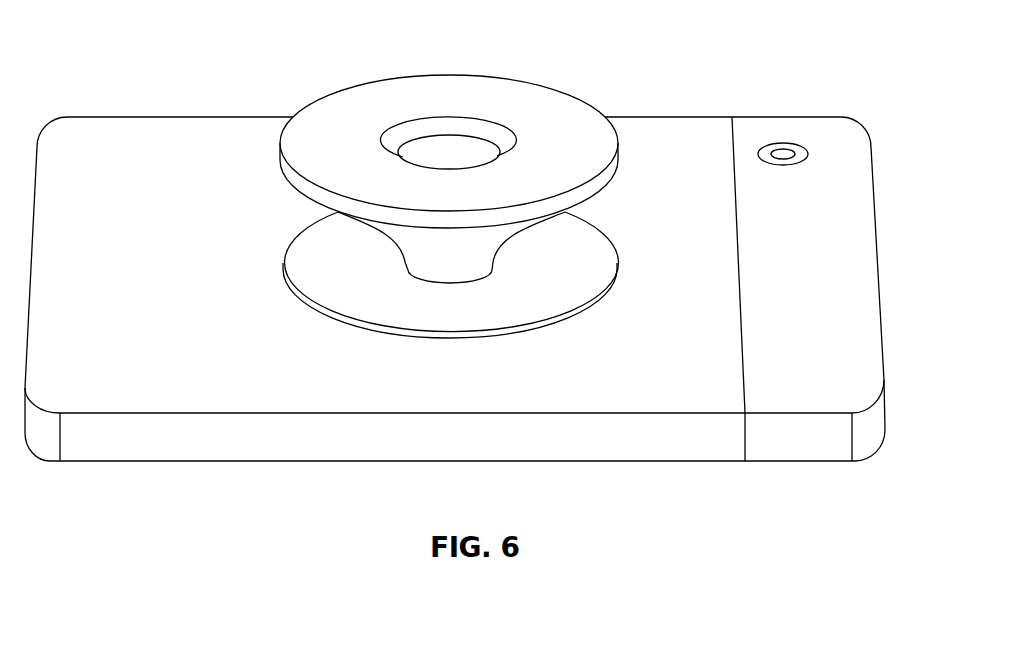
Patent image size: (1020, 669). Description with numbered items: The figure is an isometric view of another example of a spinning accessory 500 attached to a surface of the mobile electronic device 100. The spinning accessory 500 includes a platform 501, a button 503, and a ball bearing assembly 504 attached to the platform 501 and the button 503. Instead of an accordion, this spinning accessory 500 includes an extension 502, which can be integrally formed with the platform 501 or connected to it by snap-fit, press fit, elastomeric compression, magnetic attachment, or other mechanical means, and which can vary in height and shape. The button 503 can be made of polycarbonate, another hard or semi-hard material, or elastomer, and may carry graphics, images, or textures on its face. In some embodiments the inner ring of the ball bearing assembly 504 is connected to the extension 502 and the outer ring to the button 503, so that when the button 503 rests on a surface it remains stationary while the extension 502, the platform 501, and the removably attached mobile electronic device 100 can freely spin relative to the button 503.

The mobile electronic device 100 is at (202, 440).
The spinning accessory 500 is at (455, 197).
The platform 501 is at (527, 299).
The extension 502 is at (417, 252).
The button 503 is at (557, 107).
The ball bearing assembly 504 is at (458, 123).